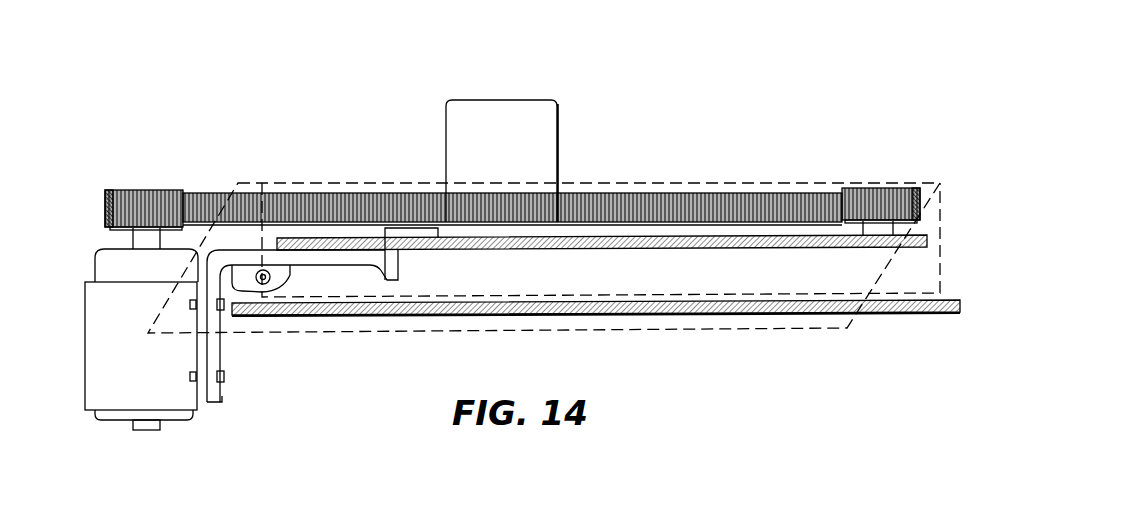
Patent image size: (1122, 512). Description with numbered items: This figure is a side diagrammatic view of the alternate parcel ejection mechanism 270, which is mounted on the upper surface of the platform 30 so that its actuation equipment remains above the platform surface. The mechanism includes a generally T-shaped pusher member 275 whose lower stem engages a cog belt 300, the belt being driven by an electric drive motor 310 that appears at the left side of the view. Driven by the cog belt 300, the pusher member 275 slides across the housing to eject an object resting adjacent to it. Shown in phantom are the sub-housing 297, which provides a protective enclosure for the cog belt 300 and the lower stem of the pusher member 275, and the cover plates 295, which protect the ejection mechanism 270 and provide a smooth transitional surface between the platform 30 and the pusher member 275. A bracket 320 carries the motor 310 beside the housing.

The parcel ejection mechanism 270 is at (470, 82).
The pusher member 275 is at (528, 100).
The cog belt 300 is at (303, 193).
The sub-housing 297 is at (948, 265).
The cover plates 295 is at (707, 331).
The platform 30 is at (899, 318).
The electric drive motor 310 is at (95, 383).
The mounting bracket 320 is at (213, 353).